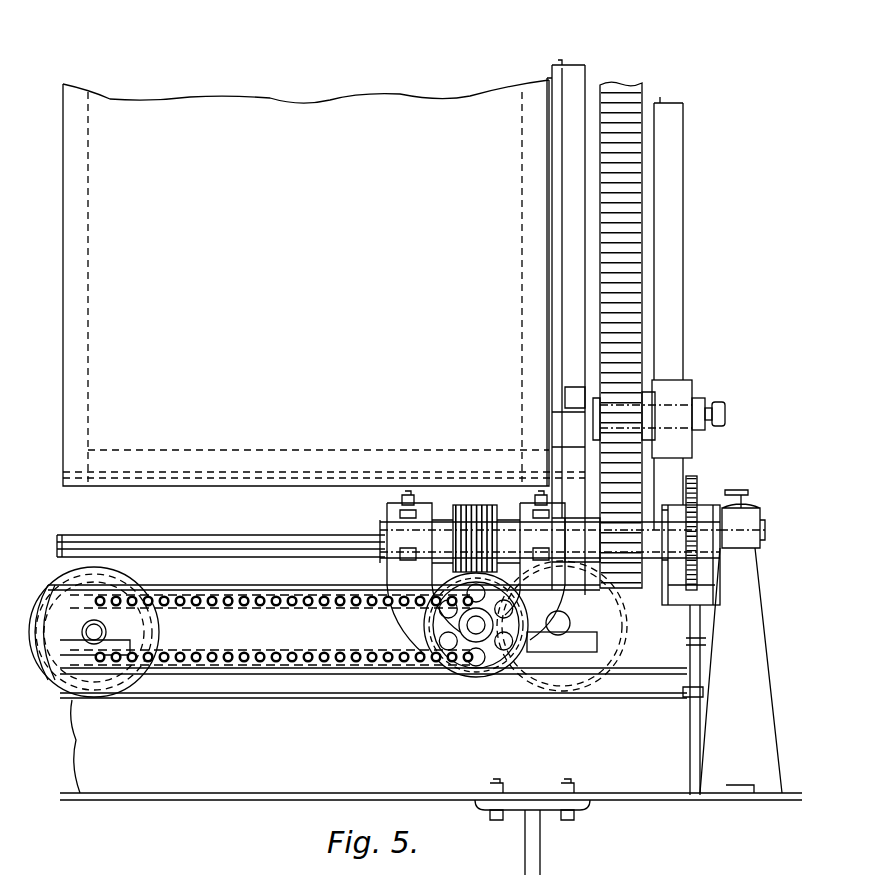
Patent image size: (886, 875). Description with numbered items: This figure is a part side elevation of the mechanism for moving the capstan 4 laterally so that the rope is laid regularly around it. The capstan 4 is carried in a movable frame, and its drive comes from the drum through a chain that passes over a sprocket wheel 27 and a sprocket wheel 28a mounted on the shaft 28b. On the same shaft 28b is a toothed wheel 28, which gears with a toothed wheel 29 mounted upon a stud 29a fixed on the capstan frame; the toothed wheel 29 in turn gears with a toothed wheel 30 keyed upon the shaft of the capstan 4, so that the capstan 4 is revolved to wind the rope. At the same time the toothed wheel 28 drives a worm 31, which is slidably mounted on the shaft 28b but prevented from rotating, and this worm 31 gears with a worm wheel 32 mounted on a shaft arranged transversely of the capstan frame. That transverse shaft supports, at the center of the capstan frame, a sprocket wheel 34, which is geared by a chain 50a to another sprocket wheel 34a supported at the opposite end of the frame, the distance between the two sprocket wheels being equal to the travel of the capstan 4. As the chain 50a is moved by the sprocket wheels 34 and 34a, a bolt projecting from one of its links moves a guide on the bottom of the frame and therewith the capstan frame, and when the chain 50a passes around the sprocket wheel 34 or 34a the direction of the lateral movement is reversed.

The capstan 4 is at (324, 283).
The sprocket wheel 27 is at (698, 482).
The toothed wheel 28 is at (646, 592).
The sprocket wheel 28a is at (715, 548).
The shaft 28b is at (270, 538).
The toothed wheel 29 is at (628, 448).
The stud 29a is at (655, 390).
The toothed wheel 30 is at (642, 187).
The worm 31 is at (468, 505).
The worm wheel 32 is at (478, 677).
The sprocket wheel 34 is at (430, 640).
The sprocket wheel 34a is at (122, 628).
The chain 50a is at (262, 655).